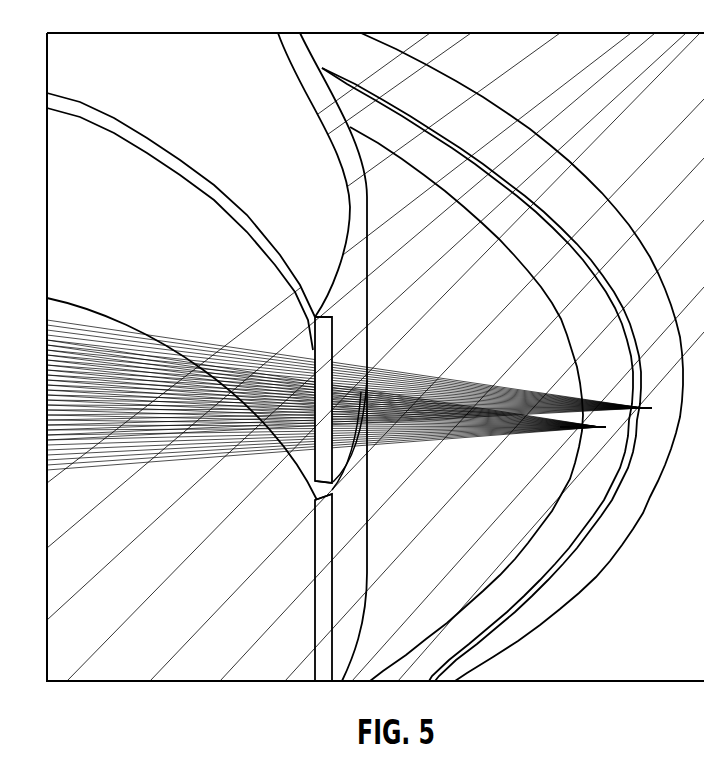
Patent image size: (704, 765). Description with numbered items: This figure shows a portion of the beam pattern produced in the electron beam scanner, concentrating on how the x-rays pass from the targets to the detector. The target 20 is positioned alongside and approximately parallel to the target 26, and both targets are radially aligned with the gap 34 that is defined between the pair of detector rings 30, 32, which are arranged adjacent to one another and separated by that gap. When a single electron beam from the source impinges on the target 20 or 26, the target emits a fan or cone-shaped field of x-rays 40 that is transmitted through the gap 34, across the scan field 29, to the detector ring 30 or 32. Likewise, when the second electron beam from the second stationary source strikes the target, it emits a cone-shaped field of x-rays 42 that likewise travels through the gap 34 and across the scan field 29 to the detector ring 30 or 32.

The target 20 is at (603, 540).
The target 26 is at (530, 572).
The scan field 29 is at (168, 480).
The detector ring 30 is at (320, 608).
The detector ring 32 is at (356, 208).
The gap 34 is at (308, 489).
The fan or cone-shaped field of x-rays 40 is at (456, 368).
The cone-shaped field of x-rays 42 is at (485, 445).